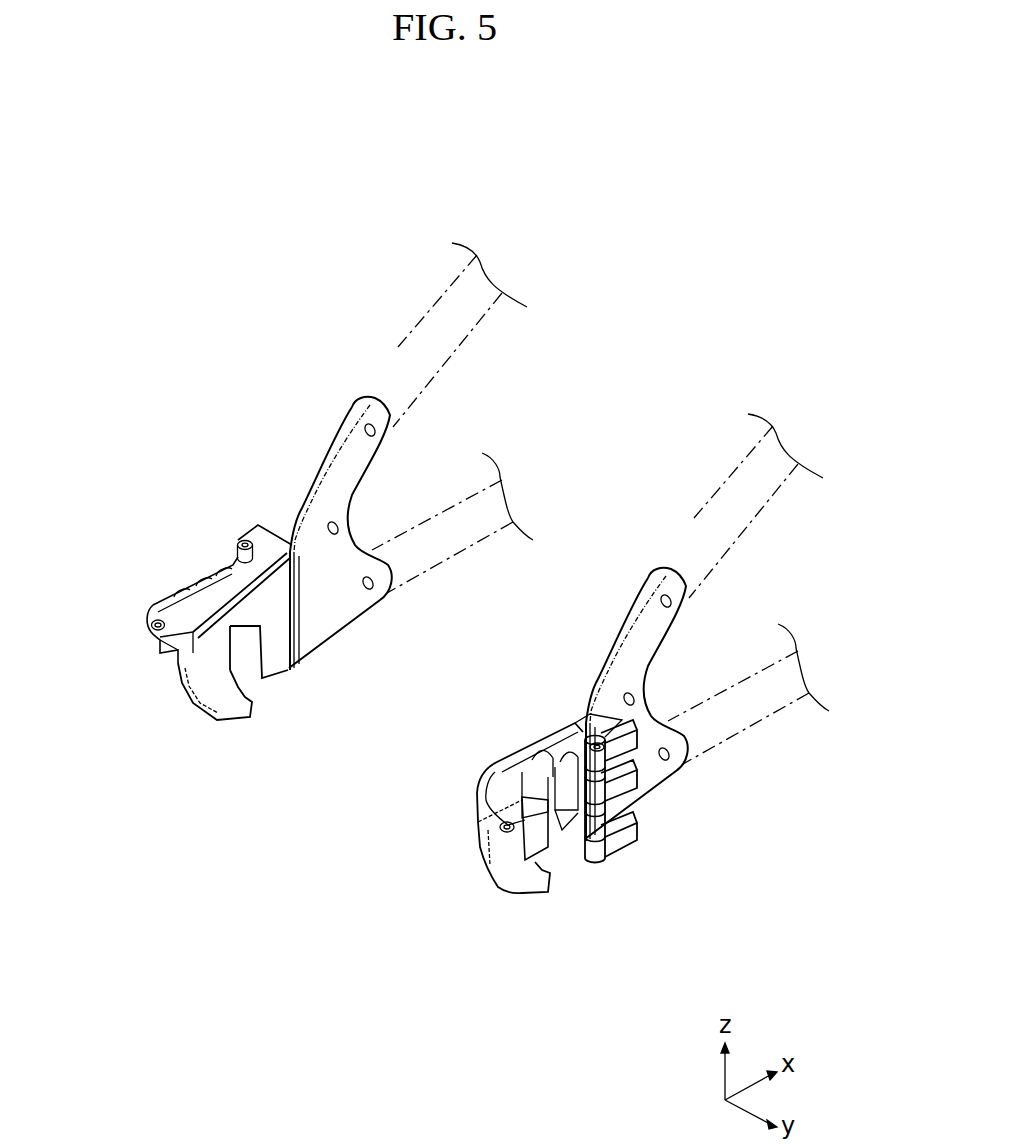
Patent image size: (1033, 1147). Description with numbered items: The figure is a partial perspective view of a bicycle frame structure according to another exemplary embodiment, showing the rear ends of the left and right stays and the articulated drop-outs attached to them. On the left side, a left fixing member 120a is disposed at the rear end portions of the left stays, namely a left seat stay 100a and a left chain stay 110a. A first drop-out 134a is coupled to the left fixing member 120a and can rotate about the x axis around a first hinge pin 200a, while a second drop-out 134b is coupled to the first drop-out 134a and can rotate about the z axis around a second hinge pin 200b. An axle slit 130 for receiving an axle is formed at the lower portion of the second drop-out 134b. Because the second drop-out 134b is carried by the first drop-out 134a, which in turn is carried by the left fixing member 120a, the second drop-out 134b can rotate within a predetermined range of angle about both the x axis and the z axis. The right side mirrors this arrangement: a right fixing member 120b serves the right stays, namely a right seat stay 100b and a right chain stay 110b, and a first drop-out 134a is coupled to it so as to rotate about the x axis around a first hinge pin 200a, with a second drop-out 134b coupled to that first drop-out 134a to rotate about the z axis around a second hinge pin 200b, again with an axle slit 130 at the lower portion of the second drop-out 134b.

The left seat stay 100a is at (405, 342).
The right seat stay 100b is at (701, 513).
The left chain stay 110a is at (440, 560).
The right chain stay 110b is at (767, 715).
The left fixing member 120a is at (332, 452).
The right fixing member 120b is at (630, 614).
The axle slit 130 is at (250, 700).
The first drop-out 134a is at (265, 604).
The second drop-out 134b is at (188, 698).
The first hinge pin 200a is at (245, 545).
The second hinge pin 200b is at (154, 625).